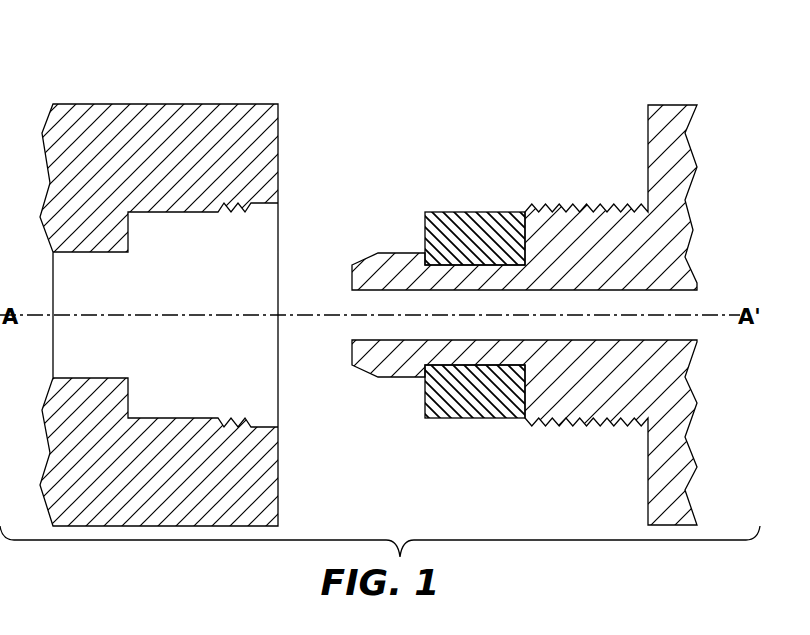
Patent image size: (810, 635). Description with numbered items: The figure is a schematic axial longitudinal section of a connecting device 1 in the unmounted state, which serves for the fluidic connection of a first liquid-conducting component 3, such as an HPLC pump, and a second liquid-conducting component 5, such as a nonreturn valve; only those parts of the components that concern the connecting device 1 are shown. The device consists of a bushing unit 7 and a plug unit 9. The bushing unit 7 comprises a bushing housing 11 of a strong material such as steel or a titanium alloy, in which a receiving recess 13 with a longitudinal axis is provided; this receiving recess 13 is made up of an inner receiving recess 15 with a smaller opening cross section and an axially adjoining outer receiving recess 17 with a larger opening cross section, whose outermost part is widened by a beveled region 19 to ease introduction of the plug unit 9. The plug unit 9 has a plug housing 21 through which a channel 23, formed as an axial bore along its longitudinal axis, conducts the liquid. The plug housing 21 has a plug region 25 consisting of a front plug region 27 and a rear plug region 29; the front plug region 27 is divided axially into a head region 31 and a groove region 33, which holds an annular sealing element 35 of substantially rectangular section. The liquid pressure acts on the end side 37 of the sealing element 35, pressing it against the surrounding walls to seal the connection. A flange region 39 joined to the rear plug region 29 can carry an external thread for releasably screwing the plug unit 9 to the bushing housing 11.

The connecting device 1 is at (543, 283).
The first liquid-conducting component 3 is at (168, 282).
The second liquid-conducting component 5 is at (543, 288).
The bushing unit 7 is at (168, 296).
The plug unit 9 is at (543, 315).
The bushing housing 11 is at (168, 315).
The receiving recess 13 is at (168, 315).
The inner receiving recess 15 is at (168, 315).
The outer receiving recess 17 is at (181, 315).
The beveled region 19 is at (270, 432).
The plug housing 21 is at (543, 288).
The channel 23 is at (543, 315).
The plug region 25 is at (493, 200).
The front plug region 27 is at (520, 315).
The rear plug region 29 is at (524, 315).
The head region 31 is at (524, 315).
The groove region 33 is at (451, 401).
The sealing element 35 is at (451, 403).
The end side 37 is at (451, 398).
The flange region 39 is at (660, 465).